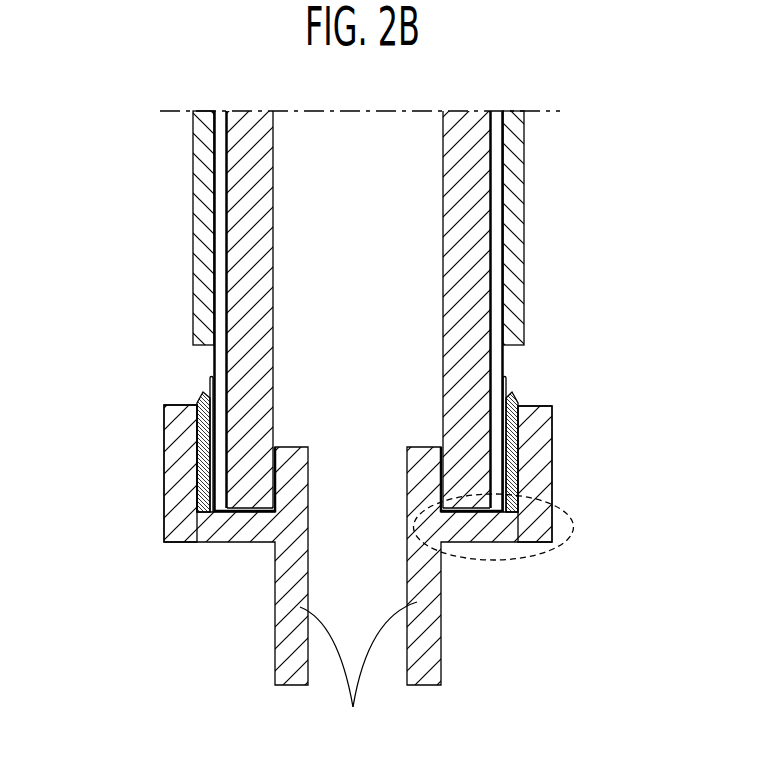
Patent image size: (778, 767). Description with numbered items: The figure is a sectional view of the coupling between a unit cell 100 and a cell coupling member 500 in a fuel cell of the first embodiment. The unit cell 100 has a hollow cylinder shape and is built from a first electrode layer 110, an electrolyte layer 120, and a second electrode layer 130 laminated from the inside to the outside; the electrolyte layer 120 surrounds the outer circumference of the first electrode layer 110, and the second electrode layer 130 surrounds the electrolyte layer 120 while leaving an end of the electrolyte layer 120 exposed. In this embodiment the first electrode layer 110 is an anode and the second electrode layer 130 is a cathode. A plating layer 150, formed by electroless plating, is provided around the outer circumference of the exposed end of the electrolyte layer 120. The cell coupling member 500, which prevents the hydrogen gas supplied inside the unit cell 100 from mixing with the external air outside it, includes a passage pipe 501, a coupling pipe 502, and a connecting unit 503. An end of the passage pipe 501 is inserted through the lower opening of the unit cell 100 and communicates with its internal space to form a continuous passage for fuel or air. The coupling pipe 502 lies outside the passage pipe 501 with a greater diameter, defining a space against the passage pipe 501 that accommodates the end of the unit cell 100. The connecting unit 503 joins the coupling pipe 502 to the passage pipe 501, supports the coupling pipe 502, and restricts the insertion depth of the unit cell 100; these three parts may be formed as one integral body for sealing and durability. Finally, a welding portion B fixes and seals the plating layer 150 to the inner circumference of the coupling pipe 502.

The unit cell 100 is at (168, 194).
The first electrode layer 110 is at (237, 222).
The electrolyte layer 120 is at (220, 263).
The second electrode layer 130 is at (203, 330).
The plating layer 150 is at (210, 380).
The welding portion B is at (197, 447).
The cell coupling member 500 is at (316, 545).
The passage pipe 501 is at (358, 674).
The coupling pipe 502 is at (177, 520).
The connecting unit 503 is at (572, 512).